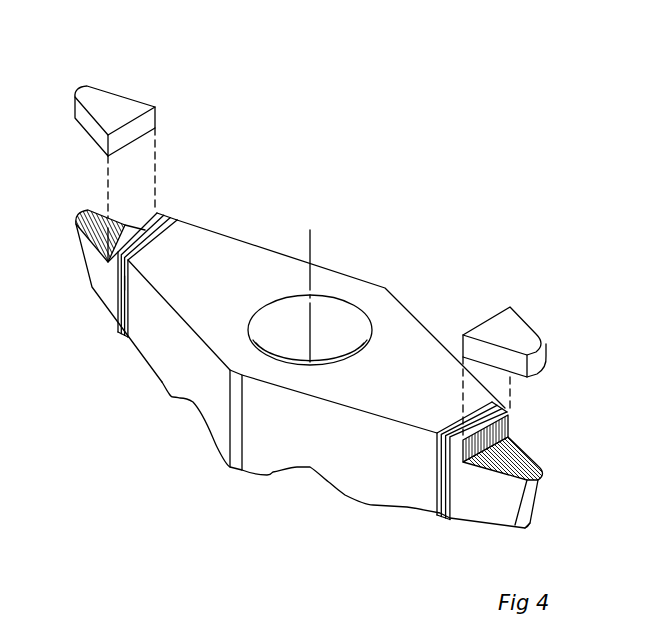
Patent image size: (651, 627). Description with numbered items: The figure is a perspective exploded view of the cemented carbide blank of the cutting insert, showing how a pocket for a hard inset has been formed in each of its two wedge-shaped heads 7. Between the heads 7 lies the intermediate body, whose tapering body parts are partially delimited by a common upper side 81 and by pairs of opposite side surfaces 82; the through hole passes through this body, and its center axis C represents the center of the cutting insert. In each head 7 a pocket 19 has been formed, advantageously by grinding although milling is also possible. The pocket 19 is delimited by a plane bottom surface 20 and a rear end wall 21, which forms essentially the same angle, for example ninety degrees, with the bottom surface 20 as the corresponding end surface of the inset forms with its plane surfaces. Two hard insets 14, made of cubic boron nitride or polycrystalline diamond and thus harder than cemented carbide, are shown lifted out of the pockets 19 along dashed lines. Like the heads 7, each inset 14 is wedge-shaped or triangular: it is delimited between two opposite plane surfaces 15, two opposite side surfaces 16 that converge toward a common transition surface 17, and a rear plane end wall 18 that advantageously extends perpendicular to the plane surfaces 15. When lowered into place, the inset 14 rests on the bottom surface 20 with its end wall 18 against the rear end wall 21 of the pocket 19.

The wedge-shaped head 7 is at (326, 381).
The hard inset 14 is at (323, 219).
The plane surface 15 is at (125, 118).
The side surface 16 is at (85, 118).
The transition surface 17 is at (542, 366).
The rear plane end wall 18 is at (150, 123).
The pocket 19 is at (516, 478).
The plane bottom surface 20 is at (528, 468).
The rear end wall 21 is at (483, 440).
The common upper side 81 is at (400, 381).
The side surfaces 82 is at (375, 468).
The center axis C is at (310, 252).